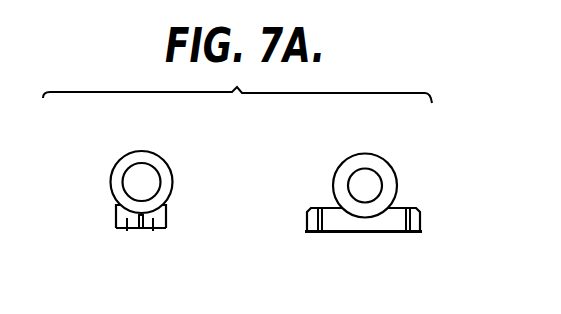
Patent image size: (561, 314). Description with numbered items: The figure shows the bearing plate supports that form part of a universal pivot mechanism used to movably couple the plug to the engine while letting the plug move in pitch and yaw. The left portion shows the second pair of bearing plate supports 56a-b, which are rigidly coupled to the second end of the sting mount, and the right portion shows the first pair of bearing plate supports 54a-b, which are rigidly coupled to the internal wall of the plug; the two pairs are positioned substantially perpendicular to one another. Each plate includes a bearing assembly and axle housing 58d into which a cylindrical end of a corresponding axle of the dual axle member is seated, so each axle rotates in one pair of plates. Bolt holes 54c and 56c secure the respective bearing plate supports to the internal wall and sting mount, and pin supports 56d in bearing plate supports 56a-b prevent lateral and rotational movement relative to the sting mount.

The second pair of bearing plate supports 56a-b is at (103, 167).
The bearing assembly and axle housing 58d is at (154, 168).
The bolt holes 56c is at (141, 229).
The pin supports 56d is at (127, 229).
The first pair of bearing plate supports 54a-b is at (317, 188).
The bolt holes 54c is at (320, 233).